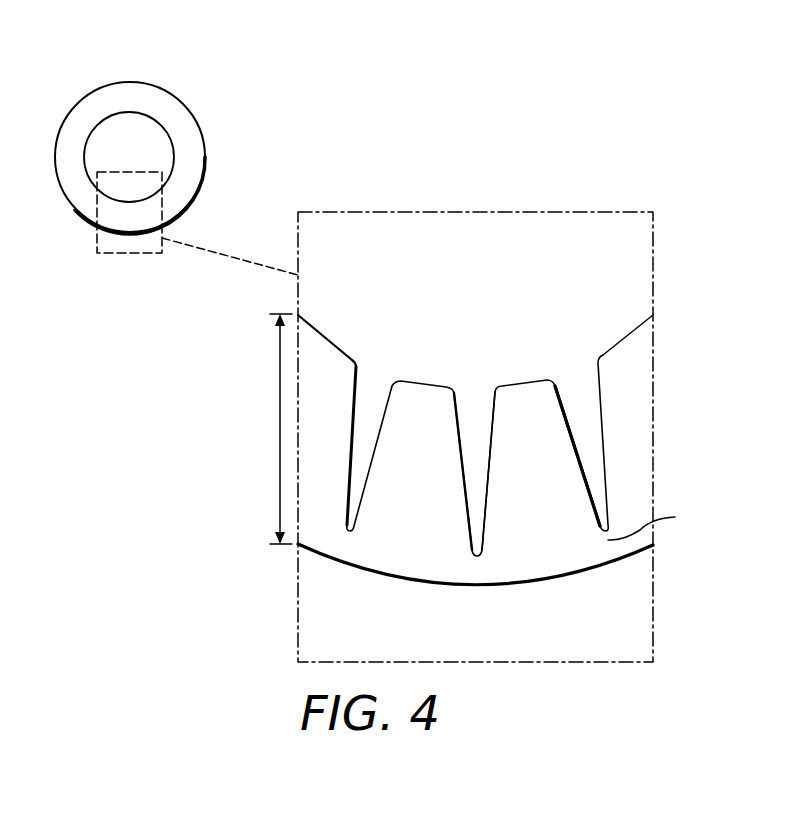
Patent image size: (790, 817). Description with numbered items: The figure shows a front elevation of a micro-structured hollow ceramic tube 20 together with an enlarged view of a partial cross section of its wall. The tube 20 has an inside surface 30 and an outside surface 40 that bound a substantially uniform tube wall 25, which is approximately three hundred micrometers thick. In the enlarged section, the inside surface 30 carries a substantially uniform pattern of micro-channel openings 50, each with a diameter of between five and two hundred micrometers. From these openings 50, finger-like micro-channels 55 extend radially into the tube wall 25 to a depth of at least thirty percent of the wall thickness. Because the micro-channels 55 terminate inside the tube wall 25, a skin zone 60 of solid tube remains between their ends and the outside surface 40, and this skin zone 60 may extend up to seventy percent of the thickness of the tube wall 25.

The micro-structured hollow ceramic tube 20 is at (77, 89).
The tube wall 25 is at (280, 430).
The inside surface 30 is at (324, 338).
The outside surface 40 is at (571, 577).
The micro-channel openings 50 is at (478, 396).
The micro-channels 55 is at (593, 463).
The skin zone 60 is at (657, 523).